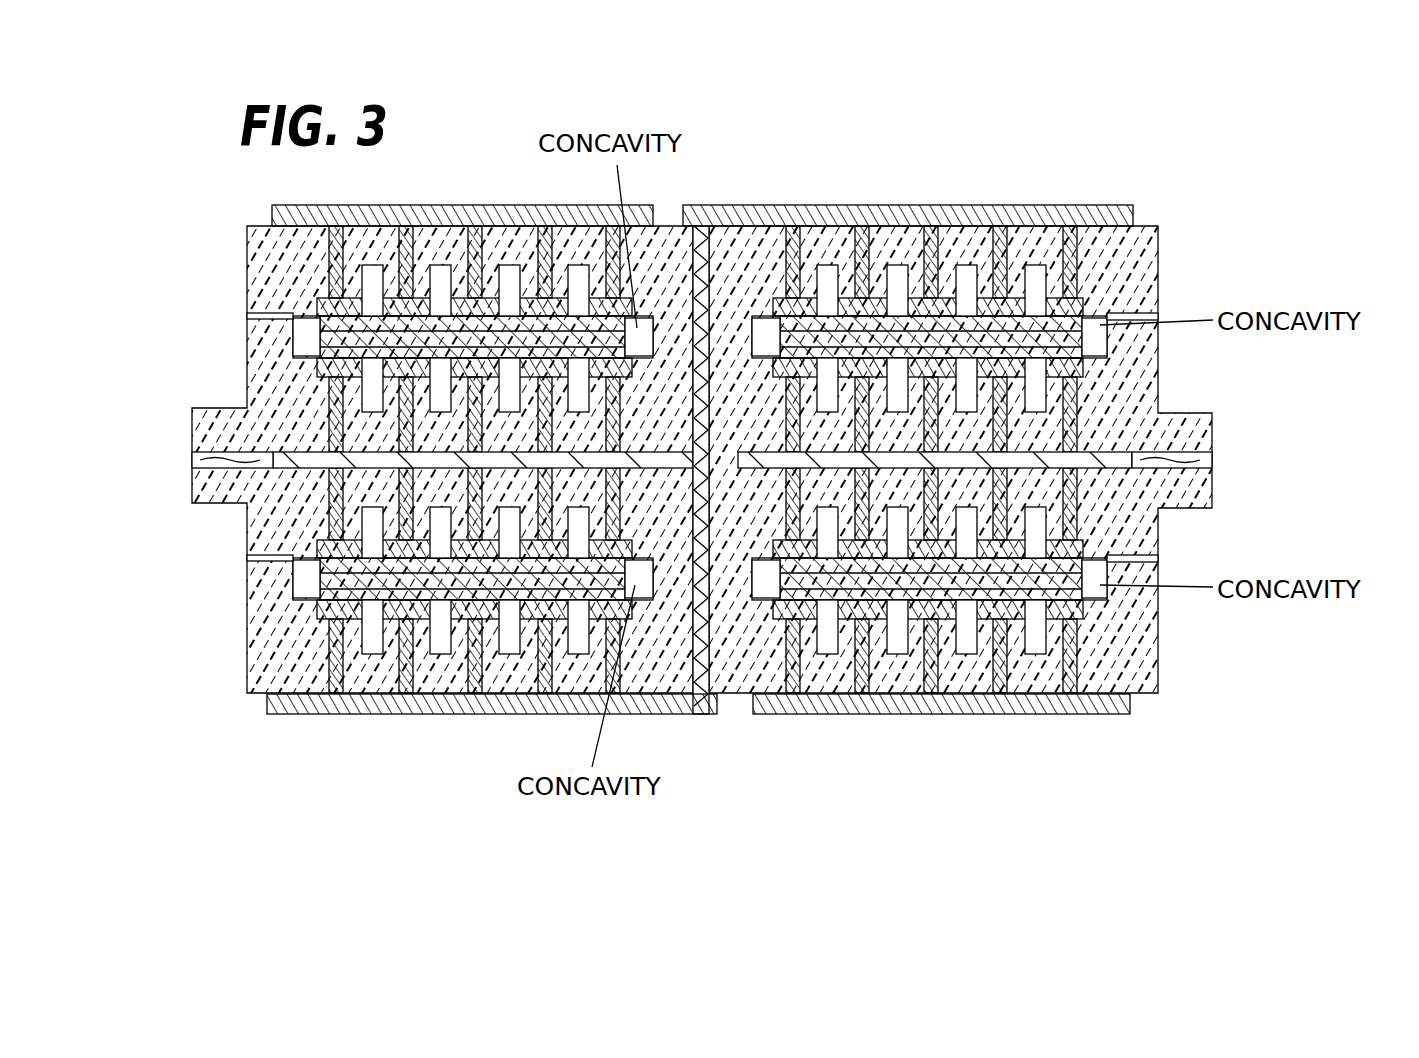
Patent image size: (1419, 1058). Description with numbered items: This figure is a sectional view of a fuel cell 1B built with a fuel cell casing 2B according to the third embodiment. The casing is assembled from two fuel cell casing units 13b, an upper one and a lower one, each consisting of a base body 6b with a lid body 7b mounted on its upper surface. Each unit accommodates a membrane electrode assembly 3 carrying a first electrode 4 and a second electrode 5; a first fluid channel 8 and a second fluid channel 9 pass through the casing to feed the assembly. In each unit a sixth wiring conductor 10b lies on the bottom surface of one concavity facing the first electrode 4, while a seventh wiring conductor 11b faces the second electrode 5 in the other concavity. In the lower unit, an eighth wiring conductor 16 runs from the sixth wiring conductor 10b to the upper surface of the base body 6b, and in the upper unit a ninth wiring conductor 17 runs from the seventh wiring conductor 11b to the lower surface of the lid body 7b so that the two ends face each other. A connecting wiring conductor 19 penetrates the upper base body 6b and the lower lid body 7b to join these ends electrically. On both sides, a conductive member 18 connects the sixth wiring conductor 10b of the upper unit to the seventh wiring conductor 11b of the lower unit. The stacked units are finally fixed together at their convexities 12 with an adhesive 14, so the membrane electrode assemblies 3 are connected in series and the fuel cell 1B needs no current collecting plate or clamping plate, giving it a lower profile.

The fuel cell 1B is at (656, 466).
The fuel cell casing 2B is at (107, 290).
The membrane electrode assembly 3 is at (1108, 343).
The first electrode 4 is at (947, 377).
The second electrode 5 is at (947, 314).
The base body 6b is at (394, 500).
The lid body 7b is at (273, 270).
The first fluid channel 8 is at (815, 397).
The second fluid channel 9 is at (828, 267).
The sixth wiring conductor 10b is at (628, 378).
The seventh wiring conductor 11b is at (628, 296).
The convexity 12 is at (227, 417).
The fuel cell casing unit 13b is at (361, 459).
The adhesive 14 is at (1212, 483).
The eighth wiring conductor 16 is at (708, 667).
The ninth wiring conductor 17 is at (702, 189).
The conductive member 18 is at (283, 452).
The connecting wiring conductor 19 is at (710, 432).